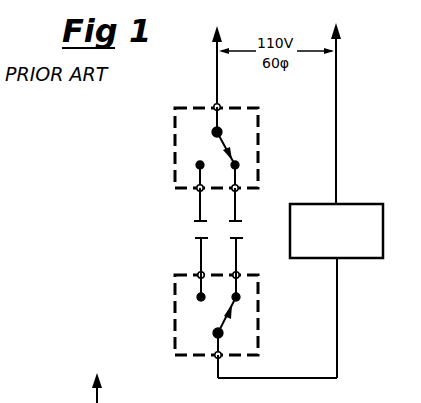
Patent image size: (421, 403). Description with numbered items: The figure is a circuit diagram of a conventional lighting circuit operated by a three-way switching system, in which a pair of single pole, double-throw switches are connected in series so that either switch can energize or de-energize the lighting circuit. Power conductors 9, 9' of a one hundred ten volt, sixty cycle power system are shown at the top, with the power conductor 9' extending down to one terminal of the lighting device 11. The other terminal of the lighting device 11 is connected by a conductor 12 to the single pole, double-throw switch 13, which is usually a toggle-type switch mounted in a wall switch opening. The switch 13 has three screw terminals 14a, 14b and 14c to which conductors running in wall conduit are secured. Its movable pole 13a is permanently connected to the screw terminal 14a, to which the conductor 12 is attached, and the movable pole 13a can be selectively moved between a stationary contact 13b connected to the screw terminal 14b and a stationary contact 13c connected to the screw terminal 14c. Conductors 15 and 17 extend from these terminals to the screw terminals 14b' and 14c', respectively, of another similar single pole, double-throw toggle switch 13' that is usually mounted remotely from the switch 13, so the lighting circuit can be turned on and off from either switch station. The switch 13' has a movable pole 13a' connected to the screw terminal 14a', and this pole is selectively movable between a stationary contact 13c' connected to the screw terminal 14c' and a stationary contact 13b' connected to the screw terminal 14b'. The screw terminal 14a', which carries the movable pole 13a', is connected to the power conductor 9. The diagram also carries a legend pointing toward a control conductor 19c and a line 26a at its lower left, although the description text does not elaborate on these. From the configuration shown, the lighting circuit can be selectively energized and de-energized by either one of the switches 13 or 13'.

The power conductor 9 is at (202, 66).
The power conductor 9' is at (351, 113).
The lighting device 11 is at (384, 217).
The conductor 12 is at (339, 333).
The single pole, double-throw switch 13 is at (193, 315).
The single pole, double-throw toggle switch 13' is at (191, 148).
The movable pole 13a is at (236, 326).
The movable pole 13a' is at (236, 136).
The stationary contact 13b is at (269, 290).
The stationary contact 13b' is at (167, 172).
The stationary contact 13c is at (170, 290).
The stationary contact 13c' is at (268, 164).
The screw terminal 14a is at (199, 361).
The screw terminal 14a' is at (192, 94).
The screw terminal 14b is at (257, 258).
The screw terminal 14b' is at (177, 191).
The screw terminal 14c is at (181, 258).
The screw terminal 14c' is at (262, 191).
The conductor 15 is at (198, 219).
The conductor 17 is at (239, 221).
The control conductor 19c is at (61, 370).
The control line 26a is at (104, 400).